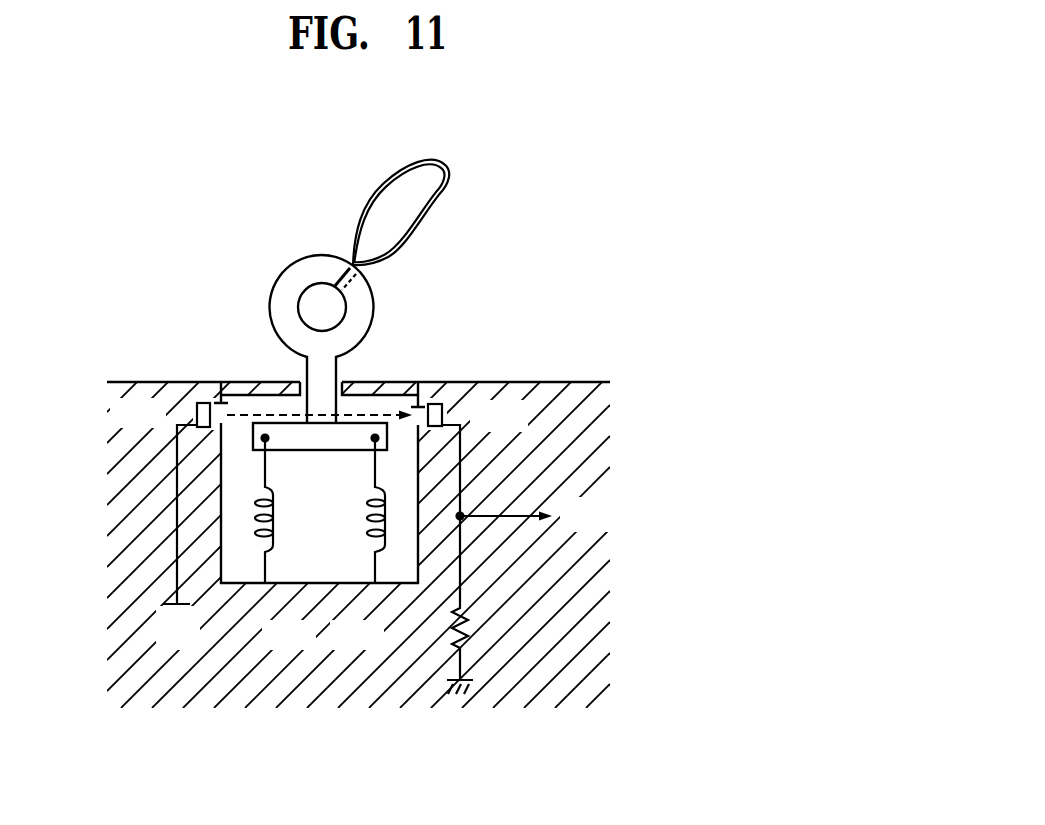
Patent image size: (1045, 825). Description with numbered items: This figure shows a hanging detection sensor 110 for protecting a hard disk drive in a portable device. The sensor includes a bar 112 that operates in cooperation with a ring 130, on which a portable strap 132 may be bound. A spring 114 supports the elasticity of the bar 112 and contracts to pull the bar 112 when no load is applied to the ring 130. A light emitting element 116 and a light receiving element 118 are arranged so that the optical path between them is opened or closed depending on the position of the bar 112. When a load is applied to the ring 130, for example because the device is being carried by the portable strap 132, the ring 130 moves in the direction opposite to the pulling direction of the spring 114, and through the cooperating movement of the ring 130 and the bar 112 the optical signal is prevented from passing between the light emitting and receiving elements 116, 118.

The hanging detection sensor 110 is at (598, 226).
The bar 112 is at (325, 385).
The spring 114 is at (277, 527).
The light emitting element 116 is at (197, 411).
The light receiving element 118 is at (443, 416).
The ring 130 is at (322, 254).
The portable strap 132 is at (443, 168).